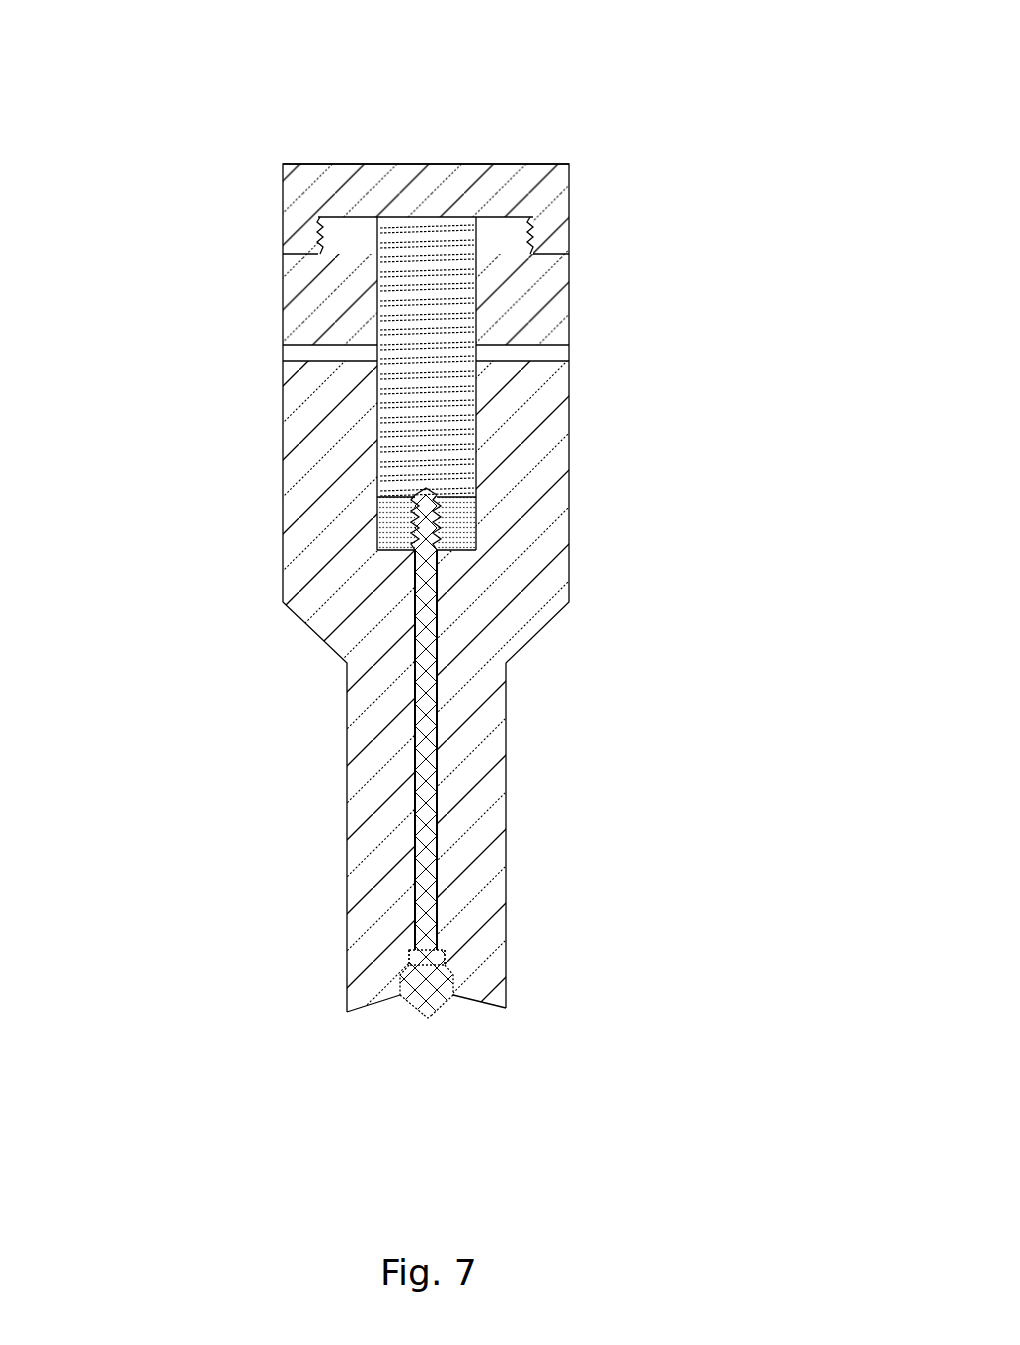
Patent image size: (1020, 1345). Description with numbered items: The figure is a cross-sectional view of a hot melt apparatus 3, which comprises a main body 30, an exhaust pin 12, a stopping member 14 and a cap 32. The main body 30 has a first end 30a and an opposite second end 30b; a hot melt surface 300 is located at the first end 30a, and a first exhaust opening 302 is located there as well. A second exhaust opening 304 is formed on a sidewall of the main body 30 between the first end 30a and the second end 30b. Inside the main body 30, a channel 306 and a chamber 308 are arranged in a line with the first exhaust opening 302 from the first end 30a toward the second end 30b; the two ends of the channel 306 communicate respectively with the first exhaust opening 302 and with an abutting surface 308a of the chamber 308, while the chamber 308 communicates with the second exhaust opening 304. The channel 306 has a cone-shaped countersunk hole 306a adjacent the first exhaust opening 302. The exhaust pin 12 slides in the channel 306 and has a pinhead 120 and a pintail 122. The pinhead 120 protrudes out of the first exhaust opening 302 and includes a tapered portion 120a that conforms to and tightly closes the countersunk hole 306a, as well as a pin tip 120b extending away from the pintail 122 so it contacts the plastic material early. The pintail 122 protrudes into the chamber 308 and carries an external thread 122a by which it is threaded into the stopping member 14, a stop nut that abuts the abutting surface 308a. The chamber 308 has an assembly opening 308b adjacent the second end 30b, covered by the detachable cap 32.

The hot melt apparatus 3 is at (178, 765).
The exhaust pin 12 is at (433, 740).
The stopping member 14 is at (380, 522).
The main body 30 is at (328, 606).
The first end 30a is at (472, 1008).
The second end 30b is at (477, 135).
The cap 32 is at (378, 193).
The pinhead 120 is at (172, 917).
The tapered portion 120a is at (400, 990).
The pin tip 120b is at (427, 1018).
The pintail 122 is at (440, 495).
The external thread 122a is at (420, 535).
The hot melt surface 300 is at (446, 1018).
The first exhaust opening 302 is at (455, 990).
The second exhaust opening 304 is at (572, 350).
The channel 306 is at (445, 783).
The countersunk hole 306a is at (452, 962).
The chamber 308 is at (478, 290).
The abutting surface 308a is at (432, 552).
The assembly opening 308b is at (452, 213).